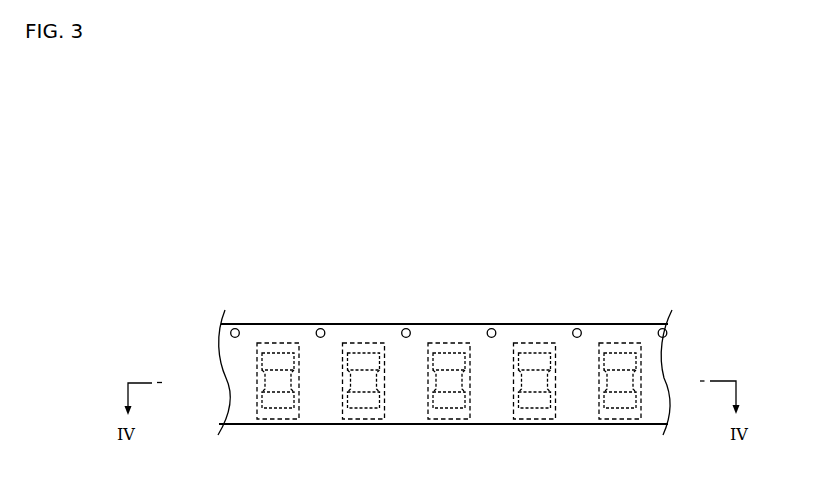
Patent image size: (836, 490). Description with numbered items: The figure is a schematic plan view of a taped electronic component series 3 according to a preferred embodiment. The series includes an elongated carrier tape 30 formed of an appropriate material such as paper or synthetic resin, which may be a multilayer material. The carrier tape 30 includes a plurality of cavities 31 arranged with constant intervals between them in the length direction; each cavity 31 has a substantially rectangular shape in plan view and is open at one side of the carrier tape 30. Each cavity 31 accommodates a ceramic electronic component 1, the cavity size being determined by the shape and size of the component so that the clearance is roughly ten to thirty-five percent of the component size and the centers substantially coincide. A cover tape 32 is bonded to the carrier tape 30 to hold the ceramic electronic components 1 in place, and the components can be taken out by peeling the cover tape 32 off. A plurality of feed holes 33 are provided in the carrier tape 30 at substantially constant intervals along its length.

The ceramic electronic component 1 is at (287, 345).
The taped electronic component series 3 is at (539, 303).
The carrier tape 30 is at (603, 319).
The cavity 31 is at (358, 342).
The cover tape 32 is at (428, 323).
The feed hole 33 is at (238, 332).